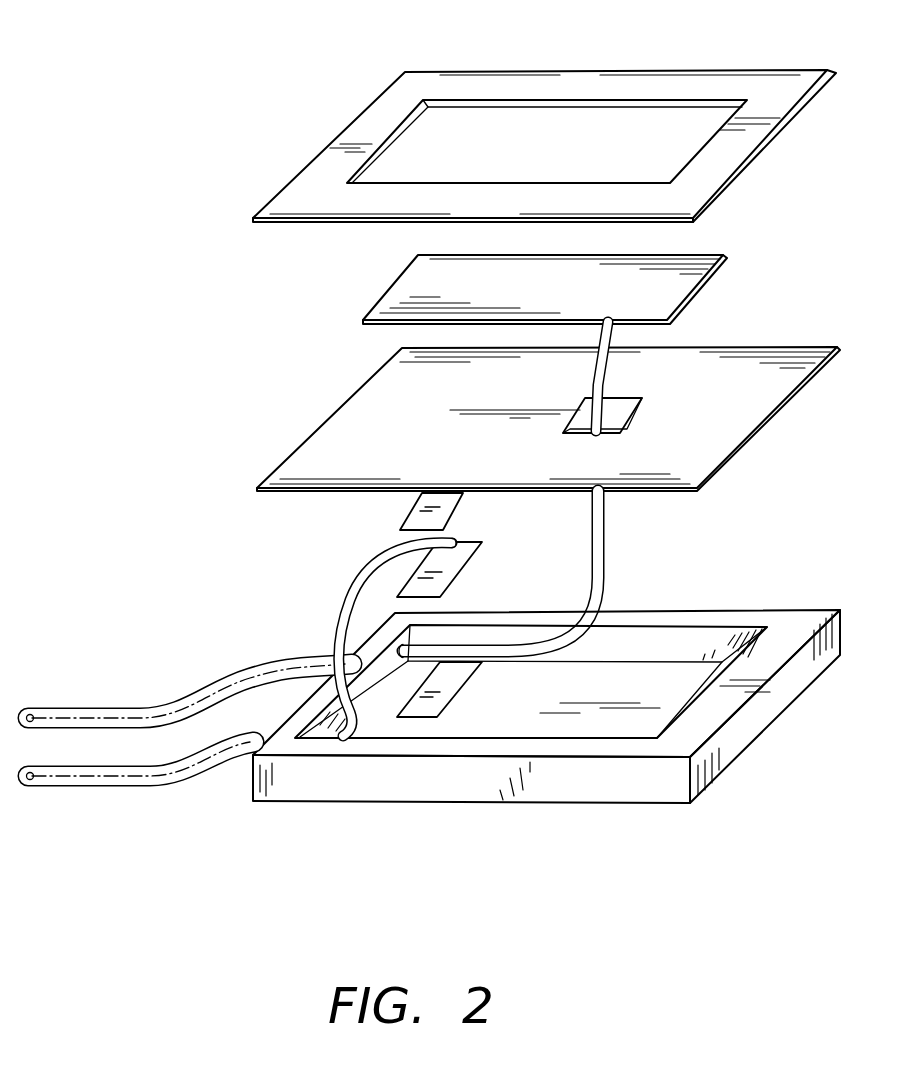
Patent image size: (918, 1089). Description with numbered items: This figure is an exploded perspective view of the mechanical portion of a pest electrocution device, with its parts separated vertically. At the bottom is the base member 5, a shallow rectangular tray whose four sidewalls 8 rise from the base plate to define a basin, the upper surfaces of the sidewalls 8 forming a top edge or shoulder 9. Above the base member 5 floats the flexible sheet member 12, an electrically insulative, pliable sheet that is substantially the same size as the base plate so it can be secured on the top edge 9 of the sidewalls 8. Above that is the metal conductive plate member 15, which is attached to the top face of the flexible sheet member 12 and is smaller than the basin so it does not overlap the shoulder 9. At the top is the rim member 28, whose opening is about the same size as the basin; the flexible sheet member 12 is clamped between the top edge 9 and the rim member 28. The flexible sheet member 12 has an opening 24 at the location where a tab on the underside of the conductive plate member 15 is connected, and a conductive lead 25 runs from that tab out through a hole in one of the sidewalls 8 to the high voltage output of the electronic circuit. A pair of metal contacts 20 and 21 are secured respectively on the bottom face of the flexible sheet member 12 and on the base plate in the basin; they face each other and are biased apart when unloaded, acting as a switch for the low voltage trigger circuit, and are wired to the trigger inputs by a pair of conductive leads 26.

The rim member 28 is at (758, 67).
The conductive plate member 15 is at (365, 313).
The flexible sheet member 12 is at (317, 425).
The opening 24 is at (620, 407).
The metal contact 20 is at (457, 556).
The metal contact 21 is at (460, 673).
The top edge 9 is at (790, 625).
The sidewalls 8 is at (768, 697).
The base member 5 is at (648, 780).
The conductive lead 25 is at (107, 708).
The conductive leads 26 is at (120, 790).